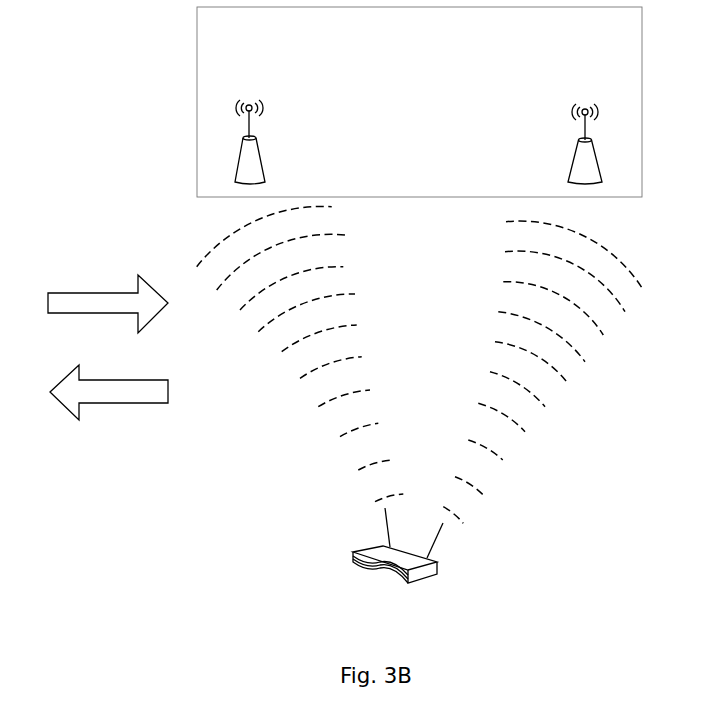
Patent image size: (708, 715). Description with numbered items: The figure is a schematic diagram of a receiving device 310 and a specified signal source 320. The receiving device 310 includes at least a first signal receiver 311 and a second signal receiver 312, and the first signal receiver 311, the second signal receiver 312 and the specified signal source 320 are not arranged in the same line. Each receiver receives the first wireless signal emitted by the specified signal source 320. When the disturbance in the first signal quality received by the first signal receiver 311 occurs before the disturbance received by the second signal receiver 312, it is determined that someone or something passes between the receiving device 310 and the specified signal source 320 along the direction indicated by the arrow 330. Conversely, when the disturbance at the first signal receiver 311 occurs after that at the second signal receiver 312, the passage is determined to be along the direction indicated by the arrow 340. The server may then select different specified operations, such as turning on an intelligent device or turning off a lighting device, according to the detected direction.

The receiving device 310 is at (240, 41).
The first signal receiver 311 is at (257, 90).
The second signal receiver 312 is at (567, 97).
The specified signal source 320 is at (378, 585).
The arrow 330 is at (93, 286).
The arrow 340 is at (123, 418).